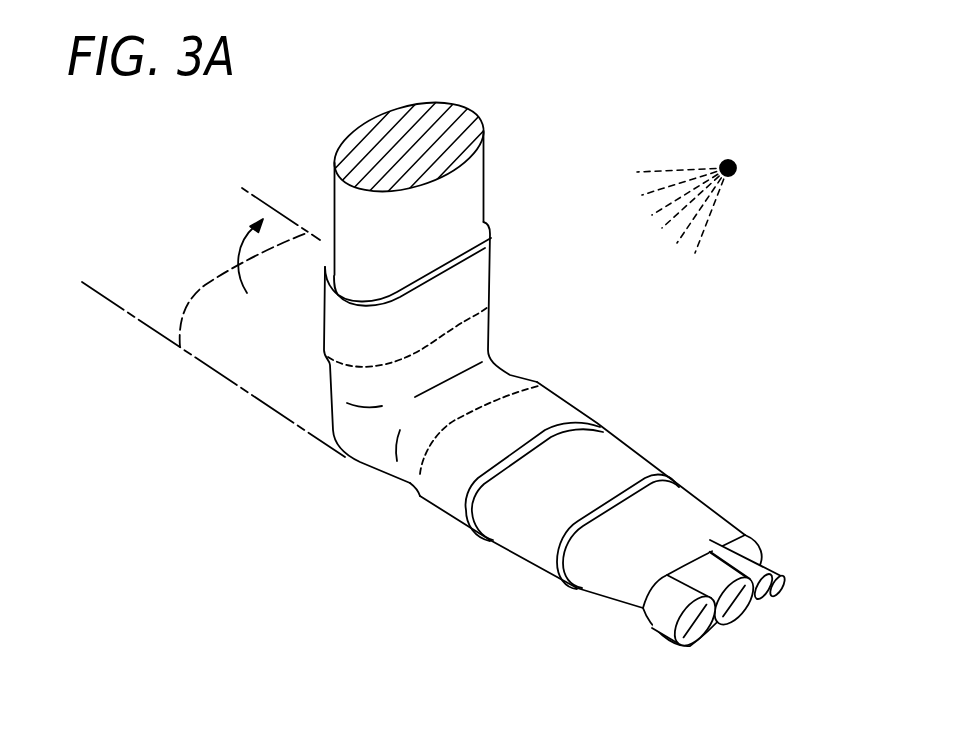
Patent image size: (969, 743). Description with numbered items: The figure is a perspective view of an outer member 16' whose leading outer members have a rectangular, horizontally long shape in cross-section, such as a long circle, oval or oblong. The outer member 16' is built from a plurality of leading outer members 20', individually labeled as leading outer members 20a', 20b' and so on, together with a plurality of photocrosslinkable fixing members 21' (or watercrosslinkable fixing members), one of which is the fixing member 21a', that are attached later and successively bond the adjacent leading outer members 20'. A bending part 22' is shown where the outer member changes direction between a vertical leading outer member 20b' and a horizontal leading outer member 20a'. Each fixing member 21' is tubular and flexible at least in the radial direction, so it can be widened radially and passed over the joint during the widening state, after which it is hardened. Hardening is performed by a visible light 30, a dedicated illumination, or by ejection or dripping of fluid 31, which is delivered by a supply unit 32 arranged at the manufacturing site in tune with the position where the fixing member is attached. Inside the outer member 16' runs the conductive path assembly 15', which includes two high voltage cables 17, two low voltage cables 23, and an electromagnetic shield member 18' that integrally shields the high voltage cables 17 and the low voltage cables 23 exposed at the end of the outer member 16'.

The conductive path assembly 15' is at (742, 498).
The outer member 16' is at (422, 366).
The high voltage cable 17 is at (720, 570).
The electromagnetic shield member 18' is at (692, 522).
The leading outer member 20' is at (495, 366).
The leading outer member 20a' is at (591, 498).
The leading outer member 20b' is at (428, 180).
The photocrosslinkable fixing member 21' is at (380, 390).
The photocrosslinkable fixing member 21a' is at (489, 504).
The bending part 22' is at (462, 381).
The low voltage cable 23 is at (774, 572).
The visible light 30 is at (662, 170).
The fluid 31 is at (681, 174).
The supply unit 32 is at (738, 168).